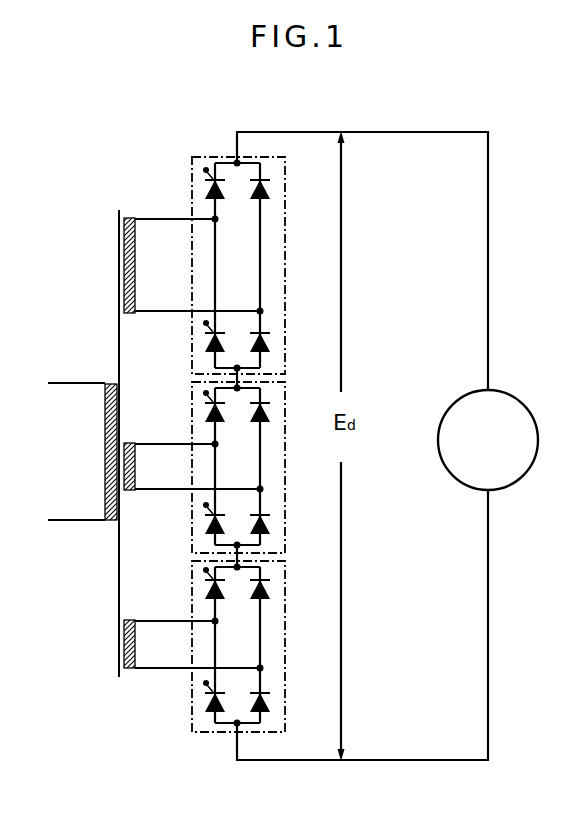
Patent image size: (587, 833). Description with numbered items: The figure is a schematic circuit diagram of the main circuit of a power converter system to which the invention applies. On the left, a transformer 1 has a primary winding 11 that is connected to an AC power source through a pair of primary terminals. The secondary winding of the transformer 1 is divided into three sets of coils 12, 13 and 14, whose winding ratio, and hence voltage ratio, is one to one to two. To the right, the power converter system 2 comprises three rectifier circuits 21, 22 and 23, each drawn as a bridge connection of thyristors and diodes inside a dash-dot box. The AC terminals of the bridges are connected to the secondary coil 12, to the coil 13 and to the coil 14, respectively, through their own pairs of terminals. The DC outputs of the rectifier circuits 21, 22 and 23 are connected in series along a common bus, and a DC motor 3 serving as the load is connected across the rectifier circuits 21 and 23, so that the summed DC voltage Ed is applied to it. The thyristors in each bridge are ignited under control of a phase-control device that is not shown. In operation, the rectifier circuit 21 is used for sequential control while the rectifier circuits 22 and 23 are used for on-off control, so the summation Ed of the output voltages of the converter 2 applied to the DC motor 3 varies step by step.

The transformer 1 is at (122, 192).
The power converter system 2 is at (229, 118).
The DC motor 3 is at (499, 452).
The primary winding 11 is at (105, 452).
The secondary coil 12 is at (135, 641).
The secondary coil 13 is at (135, 465).
The secondary coil 14 is at (135, 266).
The rectifier circuit 21 is at (285, 588).
The rectifier circuit 22 is at (285, 405).
The rectifier circuit 23 is at (285, 205).